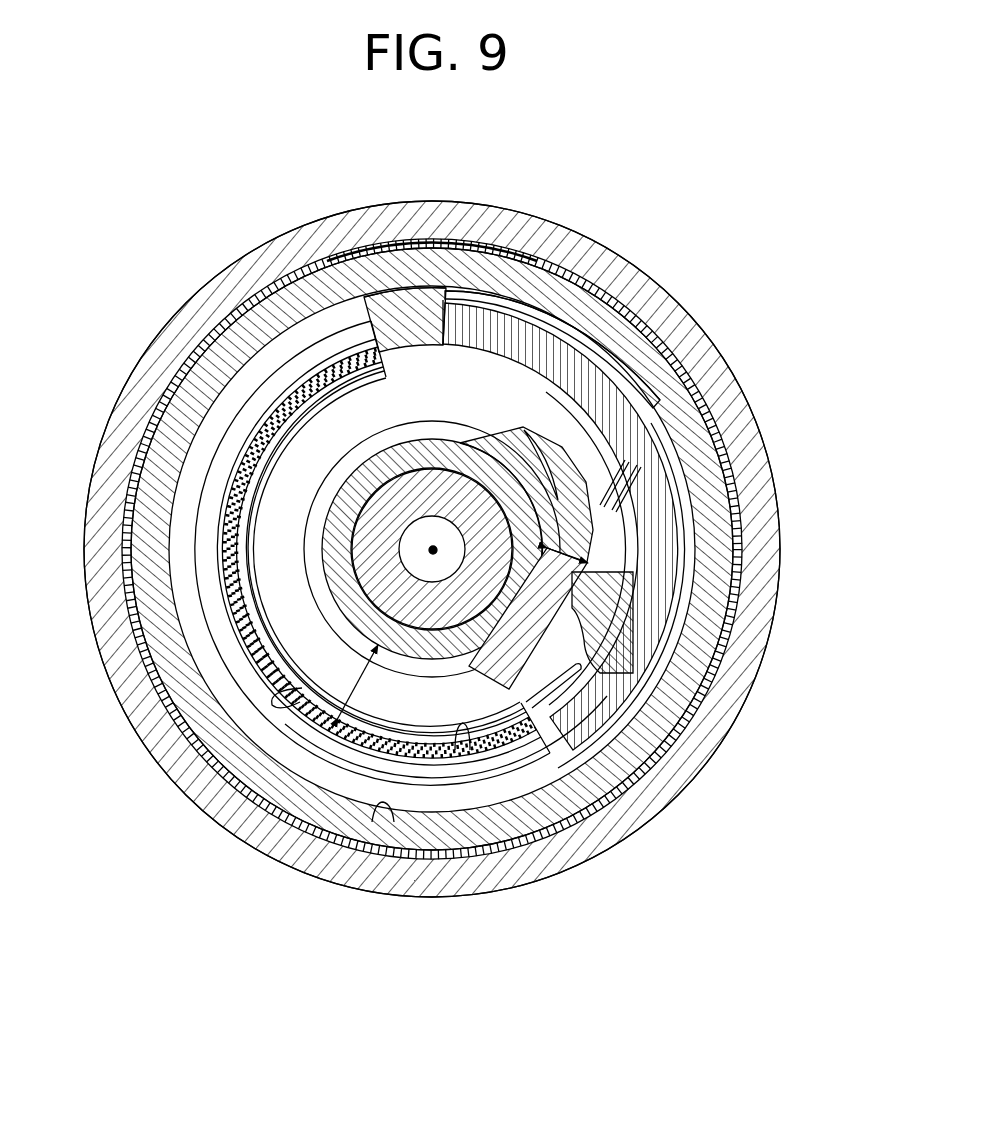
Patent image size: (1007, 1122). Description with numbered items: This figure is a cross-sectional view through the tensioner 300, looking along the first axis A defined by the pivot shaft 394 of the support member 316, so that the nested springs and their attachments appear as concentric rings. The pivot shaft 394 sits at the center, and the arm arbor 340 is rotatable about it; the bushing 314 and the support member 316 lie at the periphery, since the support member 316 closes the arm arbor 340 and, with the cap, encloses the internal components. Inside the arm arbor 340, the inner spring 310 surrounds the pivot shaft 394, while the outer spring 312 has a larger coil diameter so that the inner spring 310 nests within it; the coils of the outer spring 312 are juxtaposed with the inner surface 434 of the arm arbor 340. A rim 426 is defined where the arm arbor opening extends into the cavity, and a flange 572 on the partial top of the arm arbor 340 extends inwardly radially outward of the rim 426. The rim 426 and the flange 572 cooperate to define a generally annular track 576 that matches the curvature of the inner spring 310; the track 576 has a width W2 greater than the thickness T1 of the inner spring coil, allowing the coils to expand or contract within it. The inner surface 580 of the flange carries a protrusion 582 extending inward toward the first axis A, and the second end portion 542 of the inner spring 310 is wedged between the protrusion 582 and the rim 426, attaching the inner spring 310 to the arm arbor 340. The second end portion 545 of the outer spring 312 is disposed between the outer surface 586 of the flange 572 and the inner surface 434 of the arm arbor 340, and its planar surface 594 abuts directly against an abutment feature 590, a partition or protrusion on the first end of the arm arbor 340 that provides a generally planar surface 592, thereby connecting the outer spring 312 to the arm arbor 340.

The tensioner 300 is at (508, 1012).
The inner spring 310 is at (628, 470).
The outer spring 312 is at (697, 395).
The bushing 314 is at (700, 760).
The support member 316 is at (625, 823).
The arm arbor 340 is at (680, 693).
The pivot shaft 394 is at (455, 480).
The rim 426 is at (400, 460).
The inner surface of the arm arbor 434 is at (392, 812).
The second end portion of the inner spring 542 is at (602, 637).
The second end portion of the outer spring 545 is at (455, 300).
The flange 572 is at (340, 795).
The track 576 is at (283, 613).
The inner surface of the rim 580 is at (465, 724).
The protrusion 582 is at (610, 578).
The outer surface of the flange 586 is at (330, 702).
The abutment feature 590 is at (430, 298).
The planar surface 592 is at (441, 329).
The planar surface of the second end portion of the outer spring 594 is at (510, 335).
The first axis A is at (432, 550).
The thickness of the coil of the inner spring T1 is at (566, 553).
The width of the track W2 is at (352, 690).